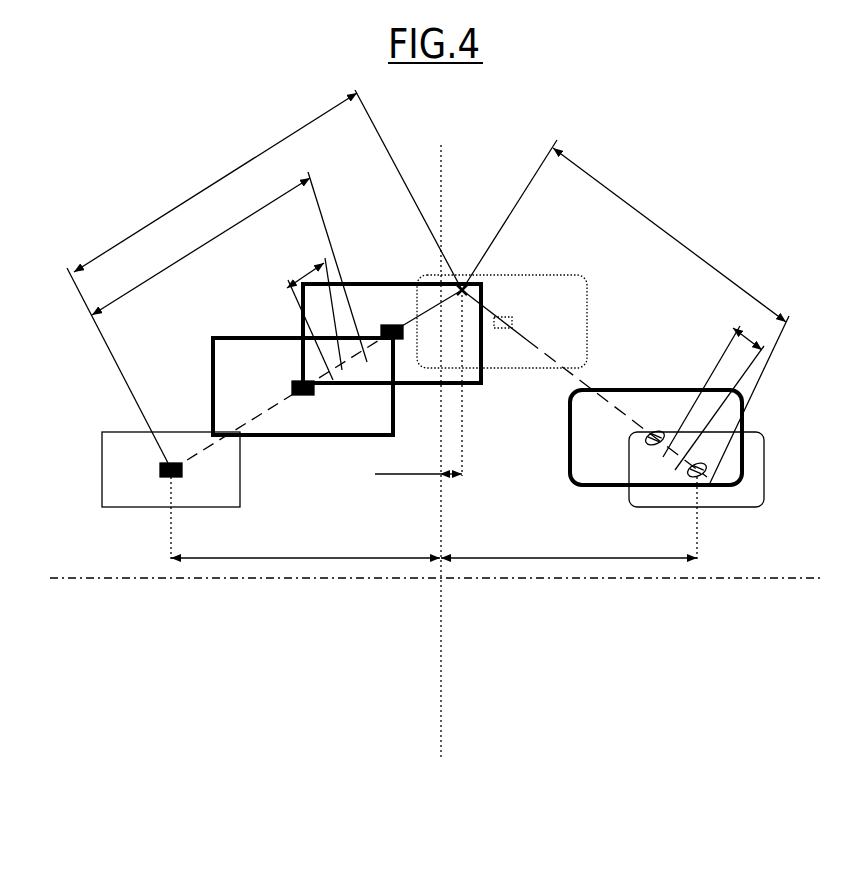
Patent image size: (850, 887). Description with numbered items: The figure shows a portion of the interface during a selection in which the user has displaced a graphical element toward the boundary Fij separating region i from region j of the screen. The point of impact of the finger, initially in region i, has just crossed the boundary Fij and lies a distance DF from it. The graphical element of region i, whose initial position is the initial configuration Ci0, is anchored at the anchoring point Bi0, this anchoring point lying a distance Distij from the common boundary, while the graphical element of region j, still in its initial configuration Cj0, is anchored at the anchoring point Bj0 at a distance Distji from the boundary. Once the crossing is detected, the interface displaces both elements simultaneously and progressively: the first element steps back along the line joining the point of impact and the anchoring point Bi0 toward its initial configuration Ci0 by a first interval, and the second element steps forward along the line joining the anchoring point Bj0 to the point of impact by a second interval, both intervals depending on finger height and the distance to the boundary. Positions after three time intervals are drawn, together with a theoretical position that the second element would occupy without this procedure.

The initial bounding box of object i Ci0 is at (120, 432).
The anchoring point Bi_0 Bi0 is at (166, 460).
The initial configuration Cj_0 Cj0 is at (767, 467).
The anchoring point Bj_0 Bj0 is at (703, 477).
The boundary Fi_j Fij is at (441, 527).
The distance Disti_j Distij is at (305, 545).
The distance Distj_i Distji is at (569, 546).